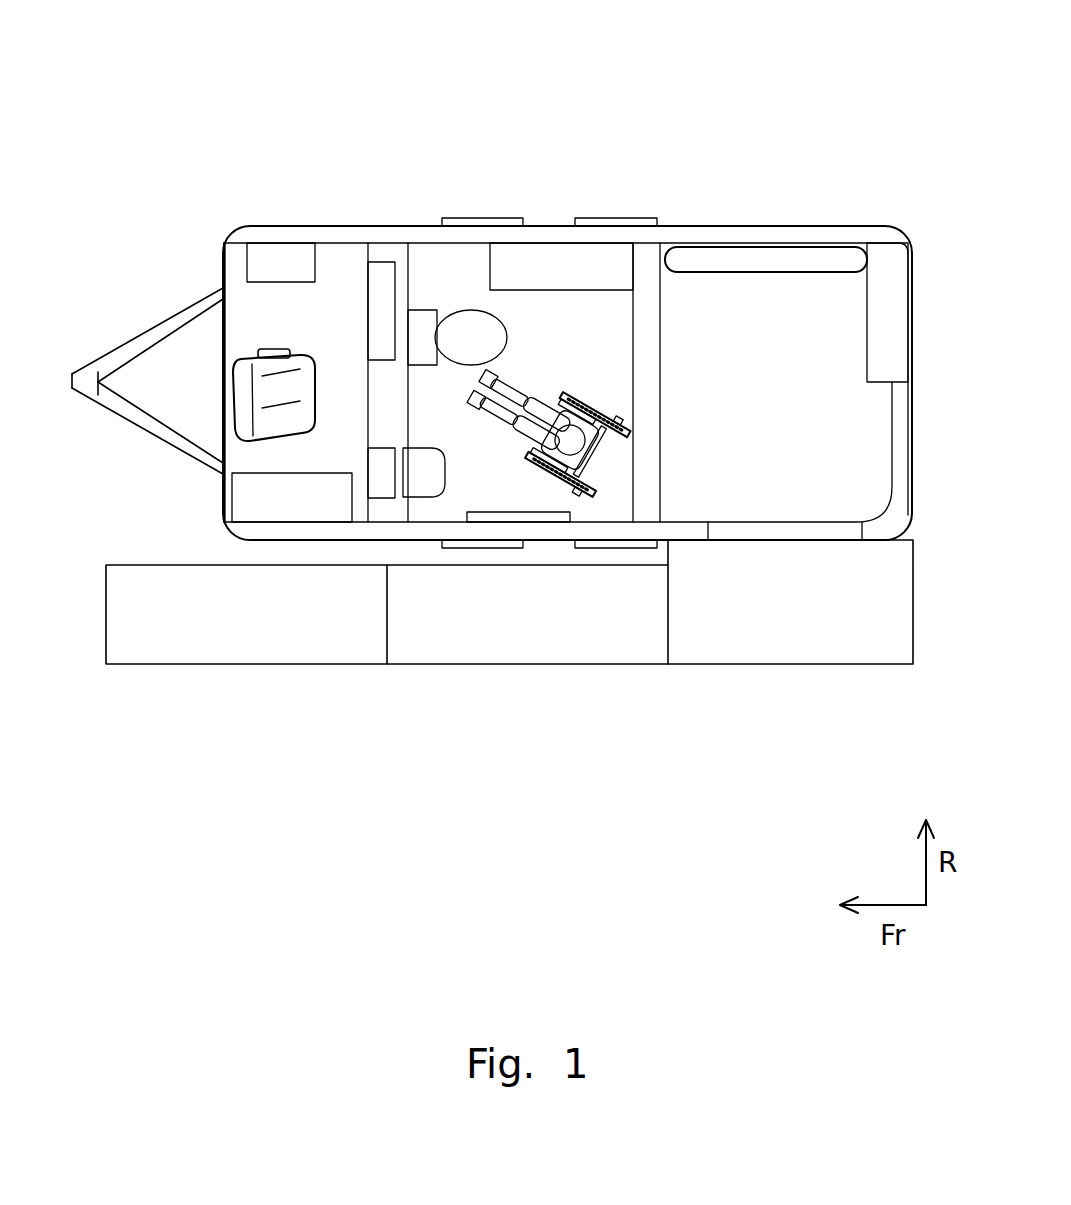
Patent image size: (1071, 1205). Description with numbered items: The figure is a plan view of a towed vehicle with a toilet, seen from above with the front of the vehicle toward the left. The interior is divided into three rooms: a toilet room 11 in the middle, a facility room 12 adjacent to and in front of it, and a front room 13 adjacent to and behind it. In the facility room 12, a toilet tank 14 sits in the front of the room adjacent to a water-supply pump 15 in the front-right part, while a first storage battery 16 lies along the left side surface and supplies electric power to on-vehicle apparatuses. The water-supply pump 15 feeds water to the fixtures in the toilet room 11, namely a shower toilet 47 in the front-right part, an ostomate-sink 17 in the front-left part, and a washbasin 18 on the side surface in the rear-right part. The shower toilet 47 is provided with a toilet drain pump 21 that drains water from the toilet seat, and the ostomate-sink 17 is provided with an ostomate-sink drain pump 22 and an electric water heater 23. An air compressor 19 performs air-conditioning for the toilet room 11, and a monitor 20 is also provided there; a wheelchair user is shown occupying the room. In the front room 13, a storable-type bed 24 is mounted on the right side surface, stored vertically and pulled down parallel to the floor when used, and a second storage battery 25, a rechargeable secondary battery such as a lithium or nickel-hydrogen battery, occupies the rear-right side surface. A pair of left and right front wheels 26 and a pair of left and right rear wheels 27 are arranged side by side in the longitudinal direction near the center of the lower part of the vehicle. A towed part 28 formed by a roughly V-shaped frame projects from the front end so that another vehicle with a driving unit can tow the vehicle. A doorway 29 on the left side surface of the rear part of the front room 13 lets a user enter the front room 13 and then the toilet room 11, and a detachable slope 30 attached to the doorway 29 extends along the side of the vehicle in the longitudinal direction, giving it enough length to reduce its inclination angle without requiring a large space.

The toilet room 11 is at (547, 200).
The facility room 12 is at (312, 200).
The front room 13 is at (823, 200).
The toilet tank 14 is at (242, 418).
The water-supply pump 15 is at (260, 257).
The first storage battery 16 is at (267, 490).
The ostomate-sink 17 is at (428, 488).
The washbasin 18 is at (580, 255).
The air compressor 19 is at (378, 278).
The monitor 20 is at (537, 515).
The toilet drain pump 21 is at (457, 235).
The ostomate-sink drain pump 22 is at (408, 472).
The electric water heater 23 is at (387, 470).
The storable-type bed 24 is at (743, 262).
The second storage battery 25 is at (883, 277).
The front wheels 26 is at (480, 220).
The rear wheels 27 is at (608, 218).
The towed part 28 is at (107, 357).
The doorway 29 is at (770, 532).
The slope 30 is at (628, 653).
The shower toilet 47 is at (447, 318).